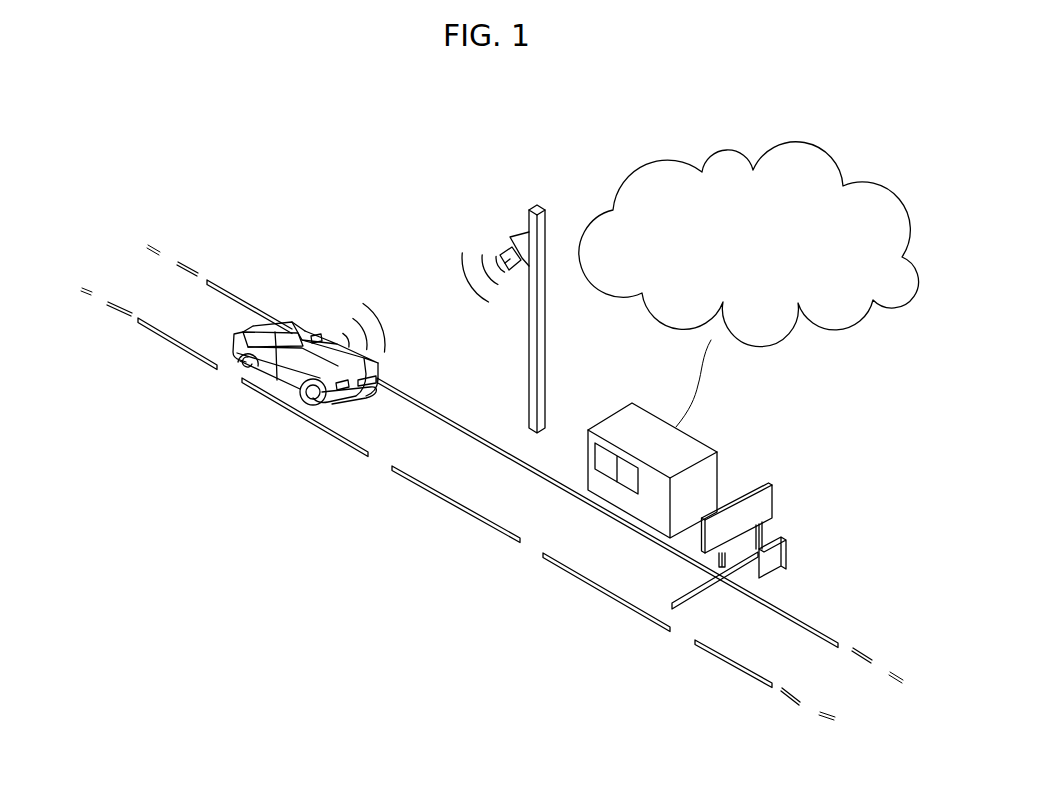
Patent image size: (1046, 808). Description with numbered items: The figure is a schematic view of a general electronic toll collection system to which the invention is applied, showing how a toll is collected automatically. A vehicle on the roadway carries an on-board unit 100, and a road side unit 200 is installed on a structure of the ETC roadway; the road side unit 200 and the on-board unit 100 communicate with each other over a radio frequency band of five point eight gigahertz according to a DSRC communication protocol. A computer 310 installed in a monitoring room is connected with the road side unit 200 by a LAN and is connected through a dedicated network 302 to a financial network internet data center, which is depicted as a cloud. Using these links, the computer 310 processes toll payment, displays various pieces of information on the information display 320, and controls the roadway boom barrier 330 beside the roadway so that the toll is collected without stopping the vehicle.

The on-board unit (OBU) 100 is at (318, 327).
The road side unit (RSU) 200 is at (505, 245).
The dedicated network 302 is at (606, 184).
The computer 310 is at (607, 421).
The information display 320 is at (773, 486).
The roadway boom barrier 330 is at (787, 551).